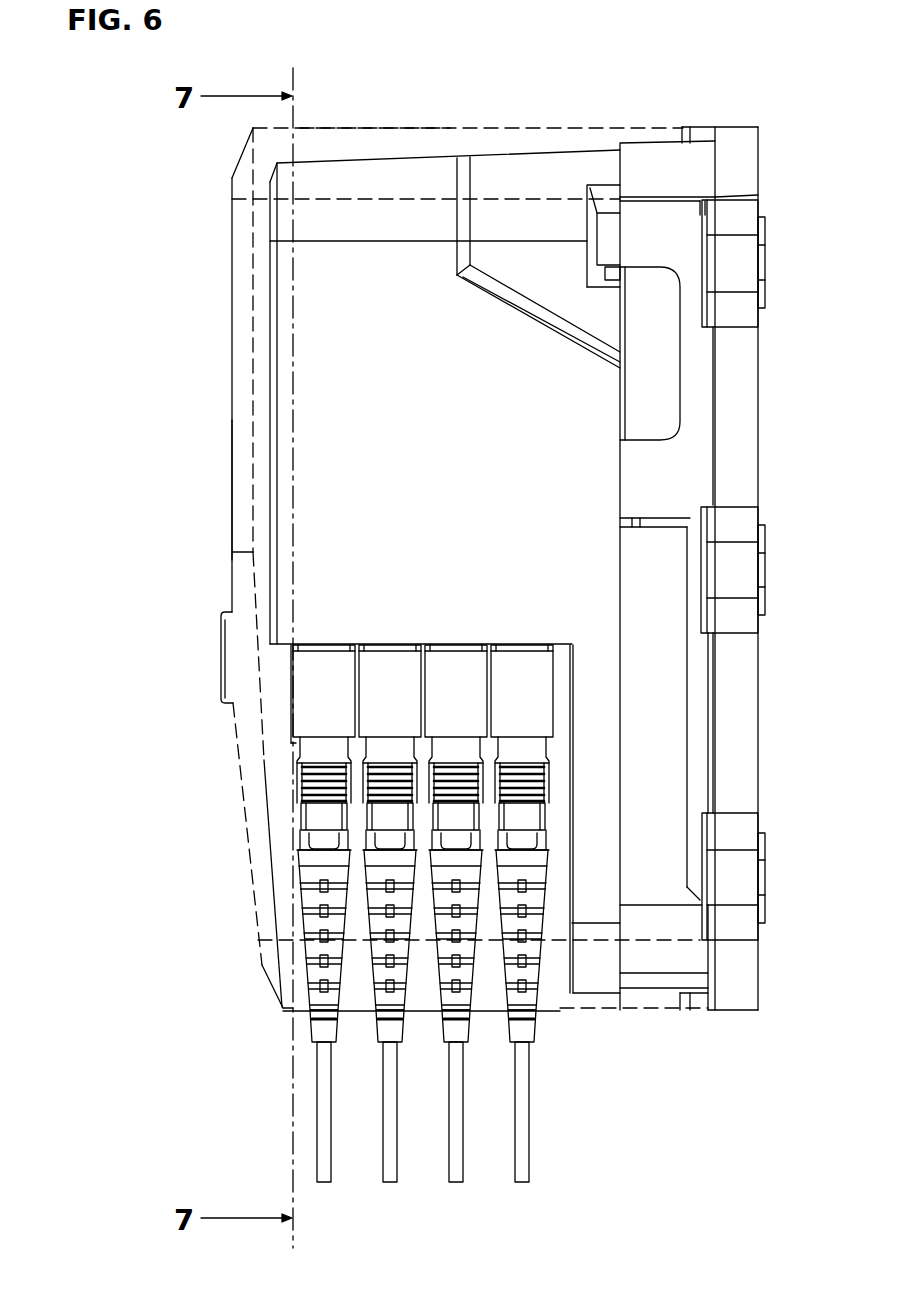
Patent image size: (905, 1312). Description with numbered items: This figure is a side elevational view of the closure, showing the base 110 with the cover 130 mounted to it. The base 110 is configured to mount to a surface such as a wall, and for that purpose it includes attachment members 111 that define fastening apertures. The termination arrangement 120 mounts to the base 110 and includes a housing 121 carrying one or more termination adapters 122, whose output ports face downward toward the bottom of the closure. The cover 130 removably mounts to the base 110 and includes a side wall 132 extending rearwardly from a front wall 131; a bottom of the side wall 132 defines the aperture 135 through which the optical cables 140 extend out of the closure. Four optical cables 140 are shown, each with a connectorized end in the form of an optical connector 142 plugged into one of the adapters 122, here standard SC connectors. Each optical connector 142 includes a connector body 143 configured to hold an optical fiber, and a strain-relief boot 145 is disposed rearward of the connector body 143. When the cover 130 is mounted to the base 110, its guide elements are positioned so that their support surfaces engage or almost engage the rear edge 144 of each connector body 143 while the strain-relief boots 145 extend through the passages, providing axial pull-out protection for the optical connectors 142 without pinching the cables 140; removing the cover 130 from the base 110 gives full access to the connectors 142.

The base 110 is at (671, 132).
The attachment members 111 is at (744, 216).
The termination arrangement 120 is at (308, 284).
The housing 121 is at (446, 437).
The termination adapters 122 is at (304, 684).
The cover 130 is at (222, 225).
The front wall 131 is at (232, 503).
The side wall 132 is at (333, 145).
The aperture 135 is at (490, 1002).
The optical cables 140 is at (537, 1163).
The optical connectors 142 is at (324, 752).
The connector body 143 is at (423, 816).
The rear edge 144 is at (308, 849).
The strain-relief boots 145 is at (313, 961).